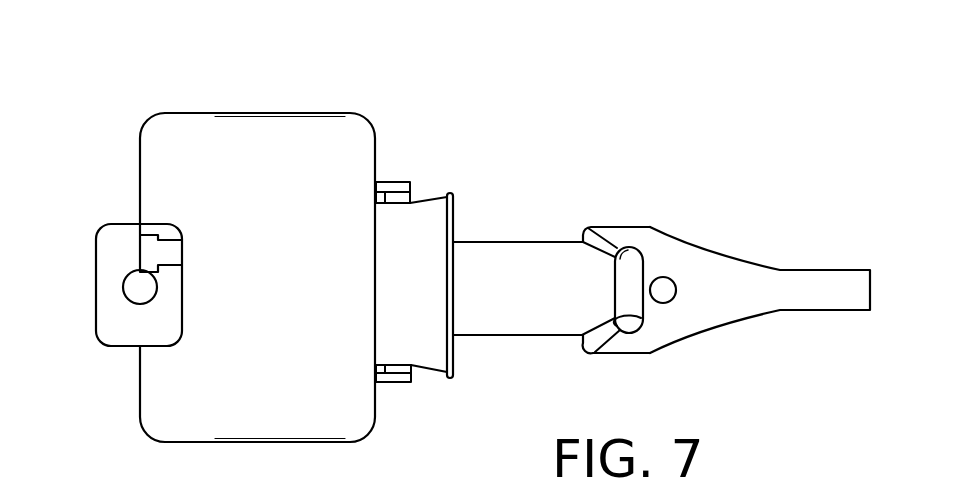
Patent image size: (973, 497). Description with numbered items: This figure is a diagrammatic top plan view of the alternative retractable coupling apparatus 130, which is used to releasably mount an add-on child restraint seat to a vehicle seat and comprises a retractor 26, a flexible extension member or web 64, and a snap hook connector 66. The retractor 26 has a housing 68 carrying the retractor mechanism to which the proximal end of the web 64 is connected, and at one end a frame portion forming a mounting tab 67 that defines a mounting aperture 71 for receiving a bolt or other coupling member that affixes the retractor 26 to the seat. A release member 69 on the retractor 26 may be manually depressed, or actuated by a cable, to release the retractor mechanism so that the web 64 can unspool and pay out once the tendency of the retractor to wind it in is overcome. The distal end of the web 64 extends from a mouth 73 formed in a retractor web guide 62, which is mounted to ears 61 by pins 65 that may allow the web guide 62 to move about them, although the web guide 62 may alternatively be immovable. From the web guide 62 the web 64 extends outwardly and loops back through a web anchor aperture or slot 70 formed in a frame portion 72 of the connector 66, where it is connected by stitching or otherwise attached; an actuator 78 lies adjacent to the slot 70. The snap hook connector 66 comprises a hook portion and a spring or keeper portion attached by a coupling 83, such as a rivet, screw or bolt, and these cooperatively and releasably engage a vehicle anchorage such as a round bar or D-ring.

The retractable coupling apparatus 130 is at (495, 105).
The retractor 26 is at (233, 111).
The housing 68 is at (257, 249).
The mounting tab 67 is at (120, 343).
The release member 69 is at (140, 252).
The mounting aperture 71 is at (130, 283).
The ears 61 is at (393, 181).
The pins 65 is at (395, 385).
The retractor web guide 62 is at (435, 352).
The mouth 73 is at (455, 208).
The flexible extension member or web 64 is at (545, 303).
The frame portion 72 is at (627, 231).
The web anchor aperture or slot 70 is at (607, 242).
The actuator 78 is at (600, 353).
The coupling 83 is at (668, 279).
The snap hook connector 66 is at (737, 308).